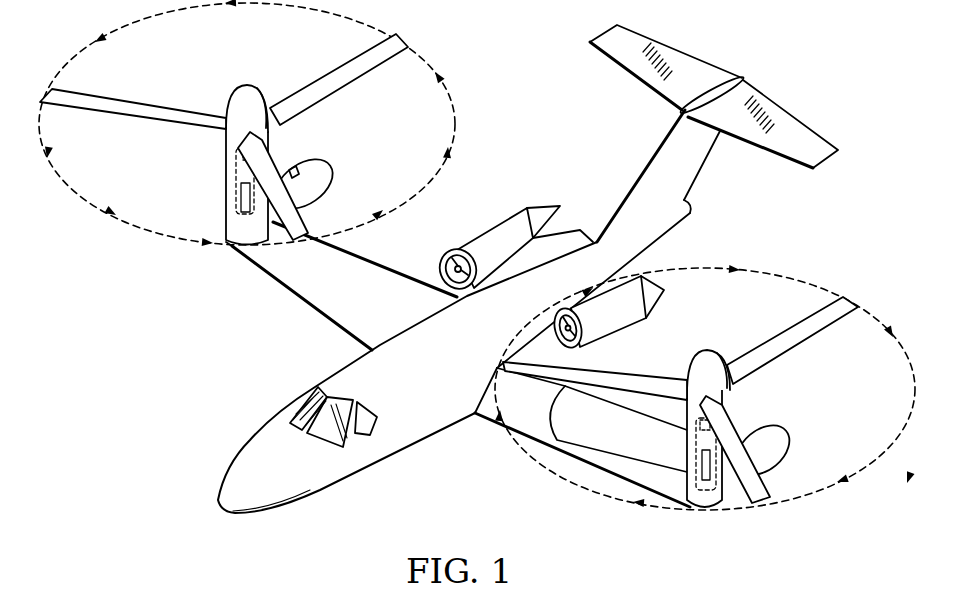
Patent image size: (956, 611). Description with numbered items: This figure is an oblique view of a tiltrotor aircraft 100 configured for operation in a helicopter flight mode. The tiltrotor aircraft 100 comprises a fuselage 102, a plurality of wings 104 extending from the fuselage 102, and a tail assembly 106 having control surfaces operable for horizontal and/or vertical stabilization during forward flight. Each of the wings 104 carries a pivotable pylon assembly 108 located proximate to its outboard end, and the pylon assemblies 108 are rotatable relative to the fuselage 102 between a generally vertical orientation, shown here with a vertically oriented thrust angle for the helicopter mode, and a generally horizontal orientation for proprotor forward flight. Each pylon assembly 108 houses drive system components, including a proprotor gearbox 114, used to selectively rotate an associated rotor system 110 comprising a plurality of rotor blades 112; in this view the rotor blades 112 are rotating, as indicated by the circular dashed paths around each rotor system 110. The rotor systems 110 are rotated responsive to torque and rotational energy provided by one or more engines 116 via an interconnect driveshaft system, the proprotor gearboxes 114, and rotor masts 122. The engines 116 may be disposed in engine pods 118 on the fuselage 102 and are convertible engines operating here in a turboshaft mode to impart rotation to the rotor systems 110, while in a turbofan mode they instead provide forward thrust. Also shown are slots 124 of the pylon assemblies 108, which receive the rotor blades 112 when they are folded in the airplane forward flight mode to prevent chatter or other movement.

The tiltrotor aircraft 100 is at (477, 255).
The fuselage 102 is at (302, 480).
The wings 104 is at (313, 280).
The tail assembly 106 is at (693, 70).
The pylon assembly 108 is at (225, 183).
The rotor system 110 is at (467, 206).
The rotor blades 112 is at (137, 100).
The proprotor gearbox 114 is at (226, 210).
The engines 116 is at (447, 256).
The engine pods 118 is at (508, 228).
The rotor mast 122 is at (240, 153).
The slots 124 is at (288, 158).